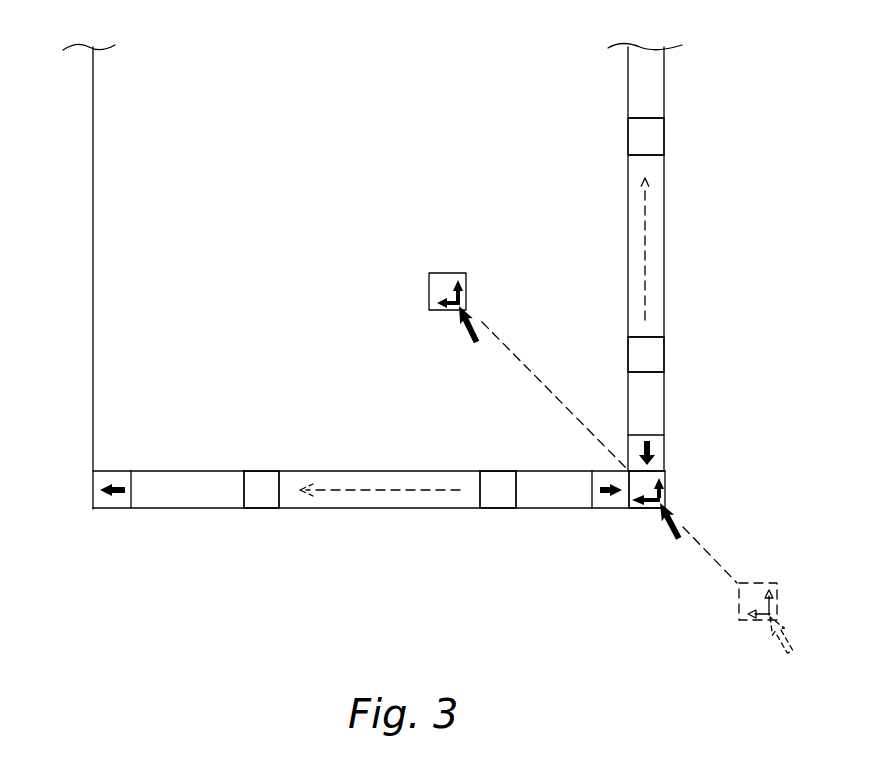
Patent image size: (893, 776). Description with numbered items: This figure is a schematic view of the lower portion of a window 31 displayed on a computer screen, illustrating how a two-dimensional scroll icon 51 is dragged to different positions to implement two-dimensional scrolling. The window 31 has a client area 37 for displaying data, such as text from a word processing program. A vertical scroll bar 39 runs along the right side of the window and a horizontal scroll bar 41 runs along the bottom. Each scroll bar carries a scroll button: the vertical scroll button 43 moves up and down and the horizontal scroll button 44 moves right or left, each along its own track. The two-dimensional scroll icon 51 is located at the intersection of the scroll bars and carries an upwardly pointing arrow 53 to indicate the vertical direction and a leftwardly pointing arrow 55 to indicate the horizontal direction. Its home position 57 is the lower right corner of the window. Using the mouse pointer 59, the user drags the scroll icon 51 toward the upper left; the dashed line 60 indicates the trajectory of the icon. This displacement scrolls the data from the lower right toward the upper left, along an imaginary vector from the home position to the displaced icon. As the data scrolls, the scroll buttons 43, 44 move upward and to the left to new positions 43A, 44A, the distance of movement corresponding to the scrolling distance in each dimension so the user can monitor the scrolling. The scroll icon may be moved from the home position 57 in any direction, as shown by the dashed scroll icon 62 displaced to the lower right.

The window 31 is at (93, 312).
The client area 37 is at (324, 186).
The vertical scroll bar 39 is at (645, 280).
The horizontal scroll bar 41 is at (377, 500).
The vertical scroll button 43 is at (645, 362).
The new position of vertical scroll button 43A is at (645, 140).
The horizontal scroll button 44 is at (497, 500).
The new position of horizontal scroll button 44A is at (261, 500).
The two-dimensional scroll icon 51 is at (447, 273).
The upwardly pointing arrow 53 is at (662, 486).
The leftwardly pointing arrow 55 is at (650, 508).
The home position 57 is at (690, 550).
The mouse pointer 59 is at (465, 330).
The dashed line 60 is at (510, 350).
The dashed scroll icon 62 is at (758, 583).